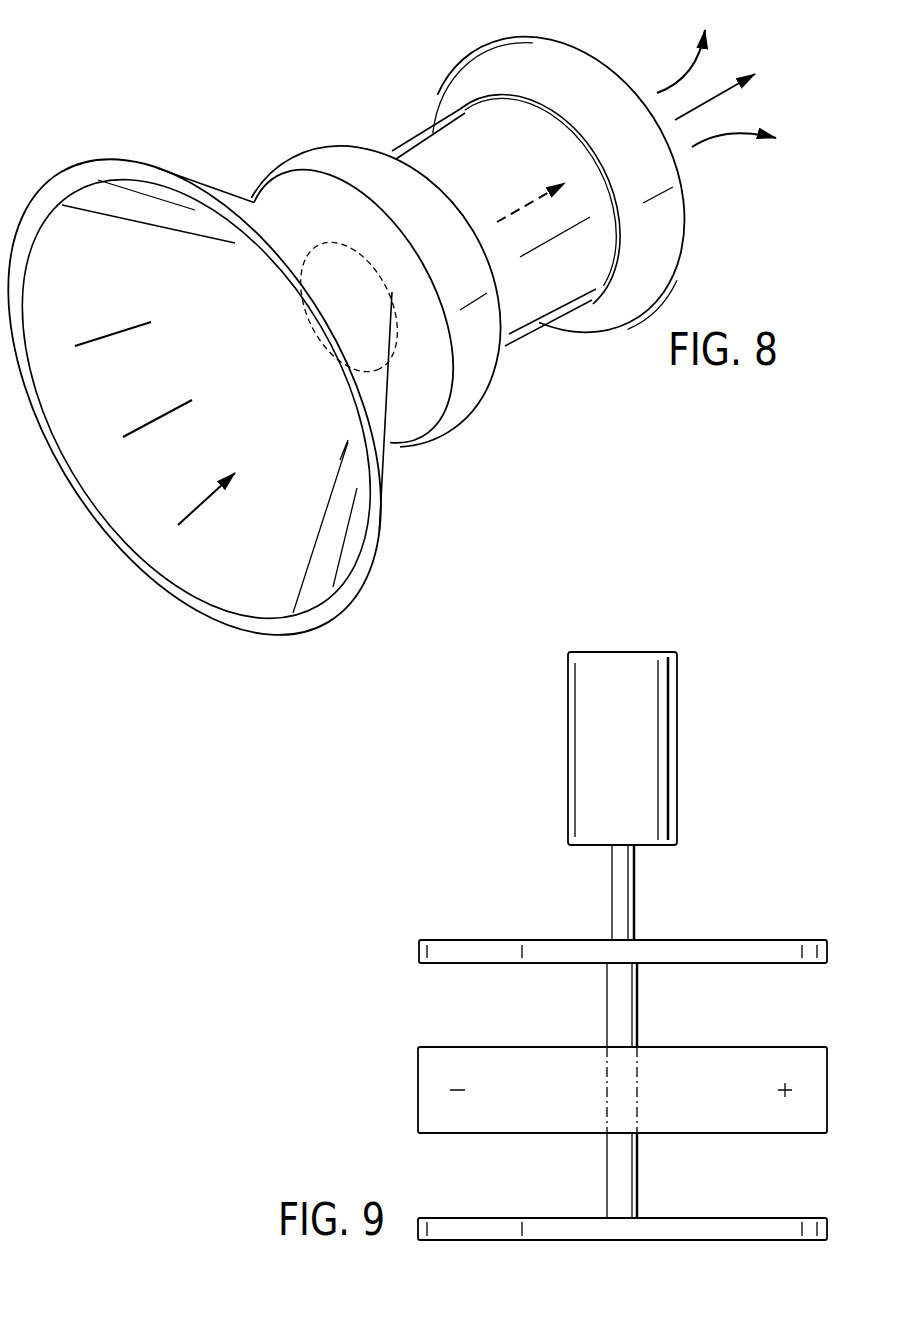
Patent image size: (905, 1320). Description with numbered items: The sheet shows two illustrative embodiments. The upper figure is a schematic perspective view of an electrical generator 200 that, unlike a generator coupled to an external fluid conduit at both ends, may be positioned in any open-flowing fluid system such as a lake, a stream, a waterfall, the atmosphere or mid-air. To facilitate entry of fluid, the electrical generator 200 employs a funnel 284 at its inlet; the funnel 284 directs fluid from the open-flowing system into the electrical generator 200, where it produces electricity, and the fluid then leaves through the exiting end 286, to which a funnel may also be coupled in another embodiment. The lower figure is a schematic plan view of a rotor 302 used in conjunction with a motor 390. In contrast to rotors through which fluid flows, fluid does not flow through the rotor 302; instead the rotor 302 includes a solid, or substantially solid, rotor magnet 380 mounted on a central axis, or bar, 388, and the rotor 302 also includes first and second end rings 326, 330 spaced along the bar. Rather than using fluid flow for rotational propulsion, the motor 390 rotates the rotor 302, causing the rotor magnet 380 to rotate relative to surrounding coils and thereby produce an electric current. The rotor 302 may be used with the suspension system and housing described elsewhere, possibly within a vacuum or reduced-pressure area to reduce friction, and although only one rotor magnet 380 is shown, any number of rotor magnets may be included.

In FIG. 8, the electrical generator 200 is at (280, 87).
In FIG. 8, the funnel 284 is at (200, 590).
In FIG. 8, the exiting end 286 is at (583, 50).
In FIG. 9, the rotor 302 is at (386, 1074).
In FIG. 9, the motor 390 is at (681, 757).
In FIG. 9, the central axis, or bar 388 is at (638, 1005).
In FIG. 9, the first end ring 326 is at (760, 938).
In FIG. 9, the rotor magnet 380 is at (528, 1046).
In FIG. 9, the second end ring 330 is at (760, 1217).